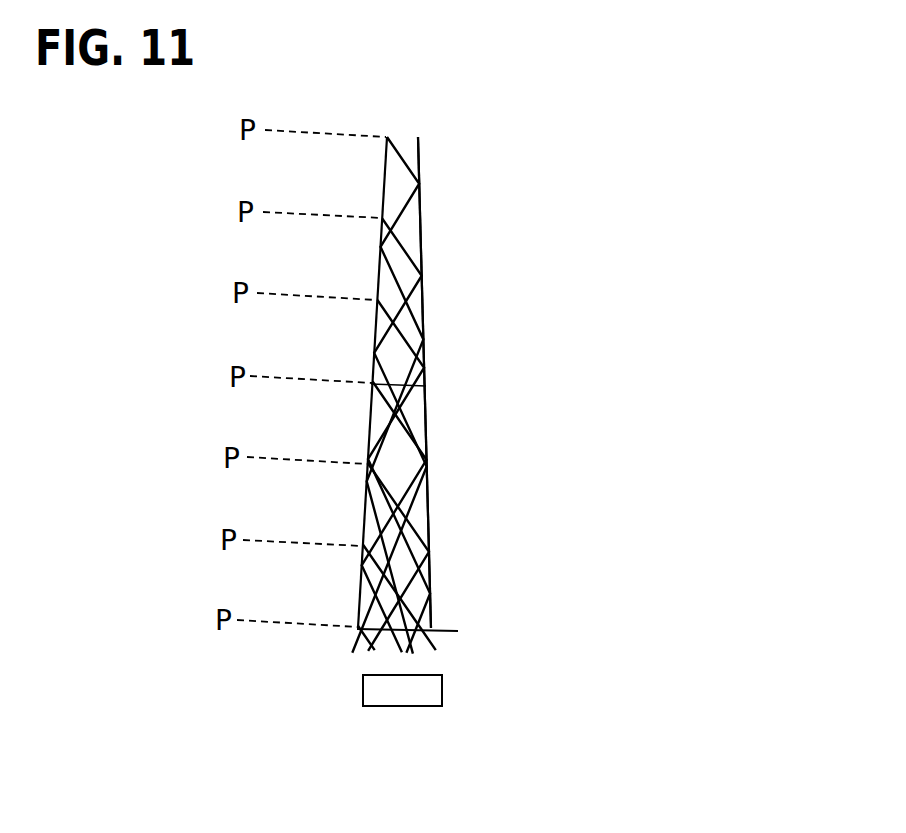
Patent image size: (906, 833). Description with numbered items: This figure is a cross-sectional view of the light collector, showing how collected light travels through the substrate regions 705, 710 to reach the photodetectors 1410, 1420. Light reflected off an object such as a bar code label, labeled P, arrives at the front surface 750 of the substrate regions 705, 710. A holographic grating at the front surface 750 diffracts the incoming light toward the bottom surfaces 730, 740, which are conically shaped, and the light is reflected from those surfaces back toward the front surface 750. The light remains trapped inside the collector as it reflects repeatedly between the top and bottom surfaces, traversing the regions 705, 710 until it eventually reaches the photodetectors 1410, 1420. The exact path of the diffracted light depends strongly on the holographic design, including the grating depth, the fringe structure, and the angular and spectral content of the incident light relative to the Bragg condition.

The substrate region 705 is at (445, 350).
The substrate region 710 is at (404, 142).
The bottom surface 730 is at (488, 382).
The bottom surface 740 is at (420, 234).
The front surface 750 is at (385, 178).
The photodetector 1410 is at (490, 676).
The photodetector 1420 is at (435, 692).